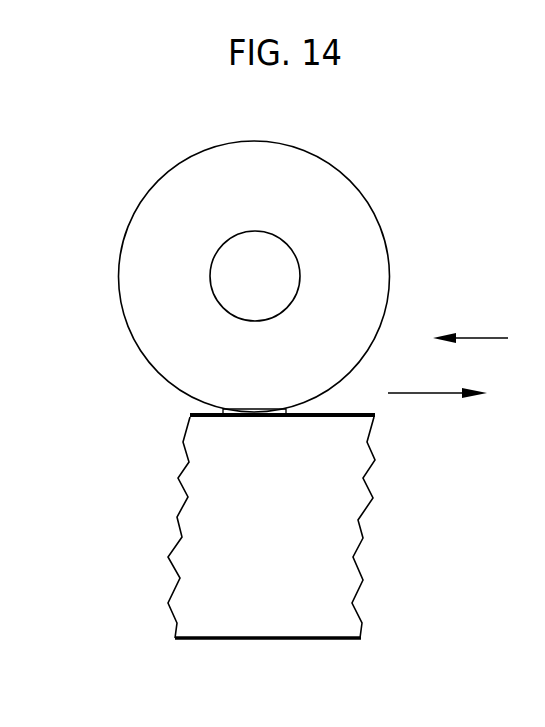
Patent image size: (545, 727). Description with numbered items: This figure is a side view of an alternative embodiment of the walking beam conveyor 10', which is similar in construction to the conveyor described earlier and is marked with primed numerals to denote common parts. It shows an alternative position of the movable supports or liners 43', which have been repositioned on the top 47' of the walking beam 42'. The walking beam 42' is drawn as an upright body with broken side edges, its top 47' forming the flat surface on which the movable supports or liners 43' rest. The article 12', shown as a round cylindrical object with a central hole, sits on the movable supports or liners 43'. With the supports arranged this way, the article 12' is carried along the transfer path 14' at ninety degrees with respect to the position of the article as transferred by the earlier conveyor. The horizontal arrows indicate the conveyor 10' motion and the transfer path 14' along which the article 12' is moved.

The article 12' is at (206, 276).
The movable supports or liners 43' is at (168, 390).
The top of the walking beam 47' is at (334, 336).
The walking beam 42' is at (320, 527).
The walking beam conveyor 10' is at (489, 337).
The transfer path 14' is at (440, 450).